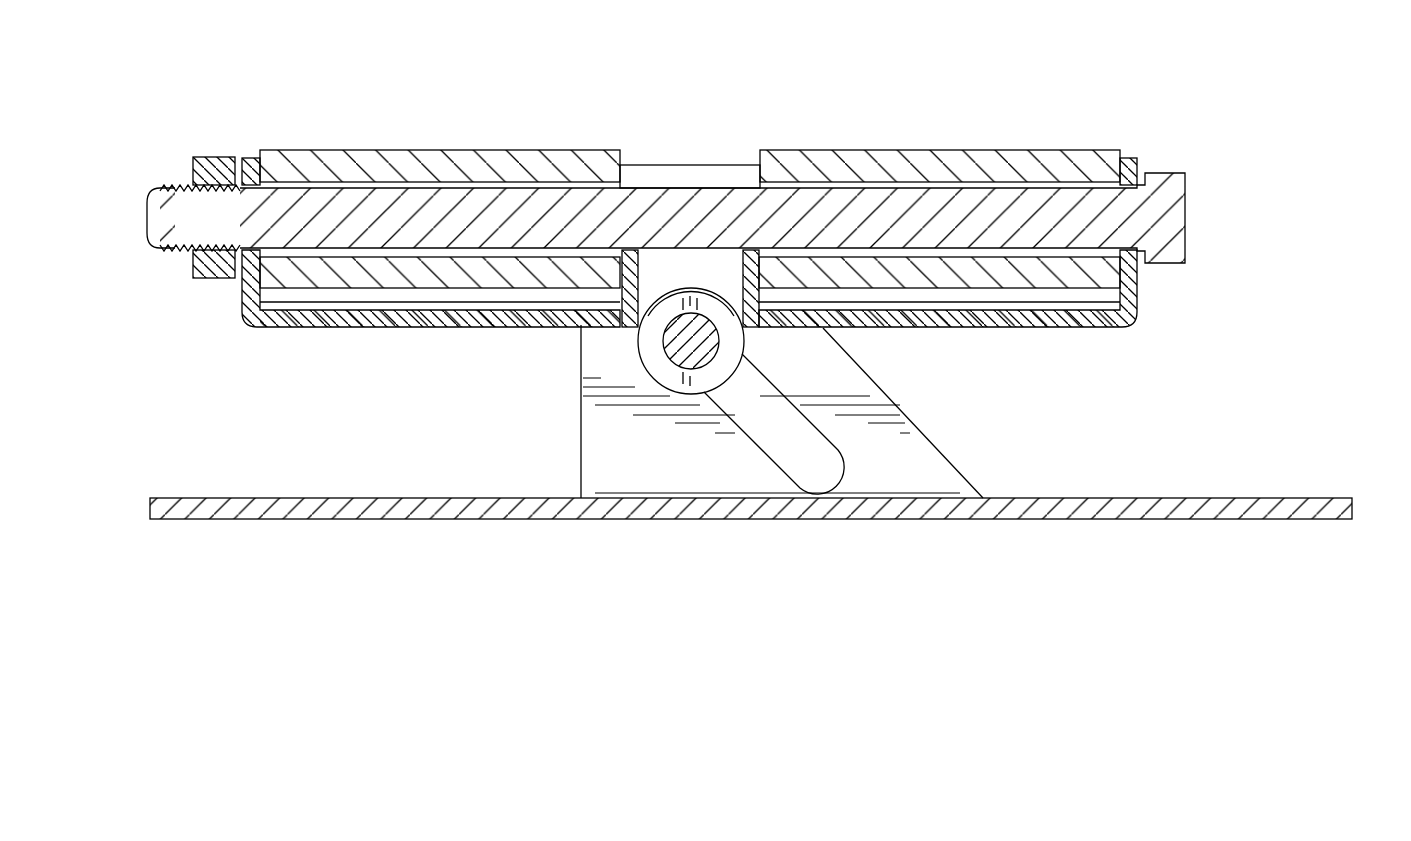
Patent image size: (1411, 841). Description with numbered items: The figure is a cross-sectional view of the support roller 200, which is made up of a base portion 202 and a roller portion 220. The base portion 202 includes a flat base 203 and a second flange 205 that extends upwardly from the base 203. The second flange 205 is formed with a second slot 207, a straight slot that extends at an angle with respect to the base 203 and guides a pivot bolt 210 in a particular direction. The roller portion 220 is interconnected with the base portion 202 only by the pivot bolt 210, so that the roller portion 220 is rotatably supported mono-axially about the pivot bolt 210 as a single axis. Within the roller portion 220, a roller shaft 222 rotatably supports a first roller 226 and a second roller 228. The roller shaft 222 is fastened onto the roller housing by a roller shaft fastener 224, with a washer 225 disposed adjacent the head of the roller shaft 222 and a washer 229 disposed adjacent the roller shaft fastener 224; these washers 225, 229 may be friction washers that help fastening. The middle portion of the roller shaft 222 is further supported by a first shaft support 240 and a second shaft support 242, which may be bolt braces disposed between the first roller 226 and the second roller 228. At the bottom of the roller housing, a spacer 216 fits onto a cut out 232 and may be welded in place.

The support roller 200 is at (1332, 248).
The base portion 202 is at (1306, 444).
The base 203 is at (1063, 503).
The second flange 205 is at (919, 482).
The second slot 207 is at (837, 448).
The pivot bolt 210 is at (688, 355).
The spacer 216 is at (725, 367).
The roller portion 220 is at (143, 151).
The roller shaft 222 is at (1172, 212).
The roller shaft fastener 224 is at (215, 163).
The washer 225 is at (1141, 172).
The first roller 226 is at (985, 162).
The second roller 228 is at (494, 158).
The washer 229 is at (245, 165).
The cut out 232 is at (683, 294).
The first shaft support 240 is at (748, 332).
The second shaft support 242 is at (630, 328).